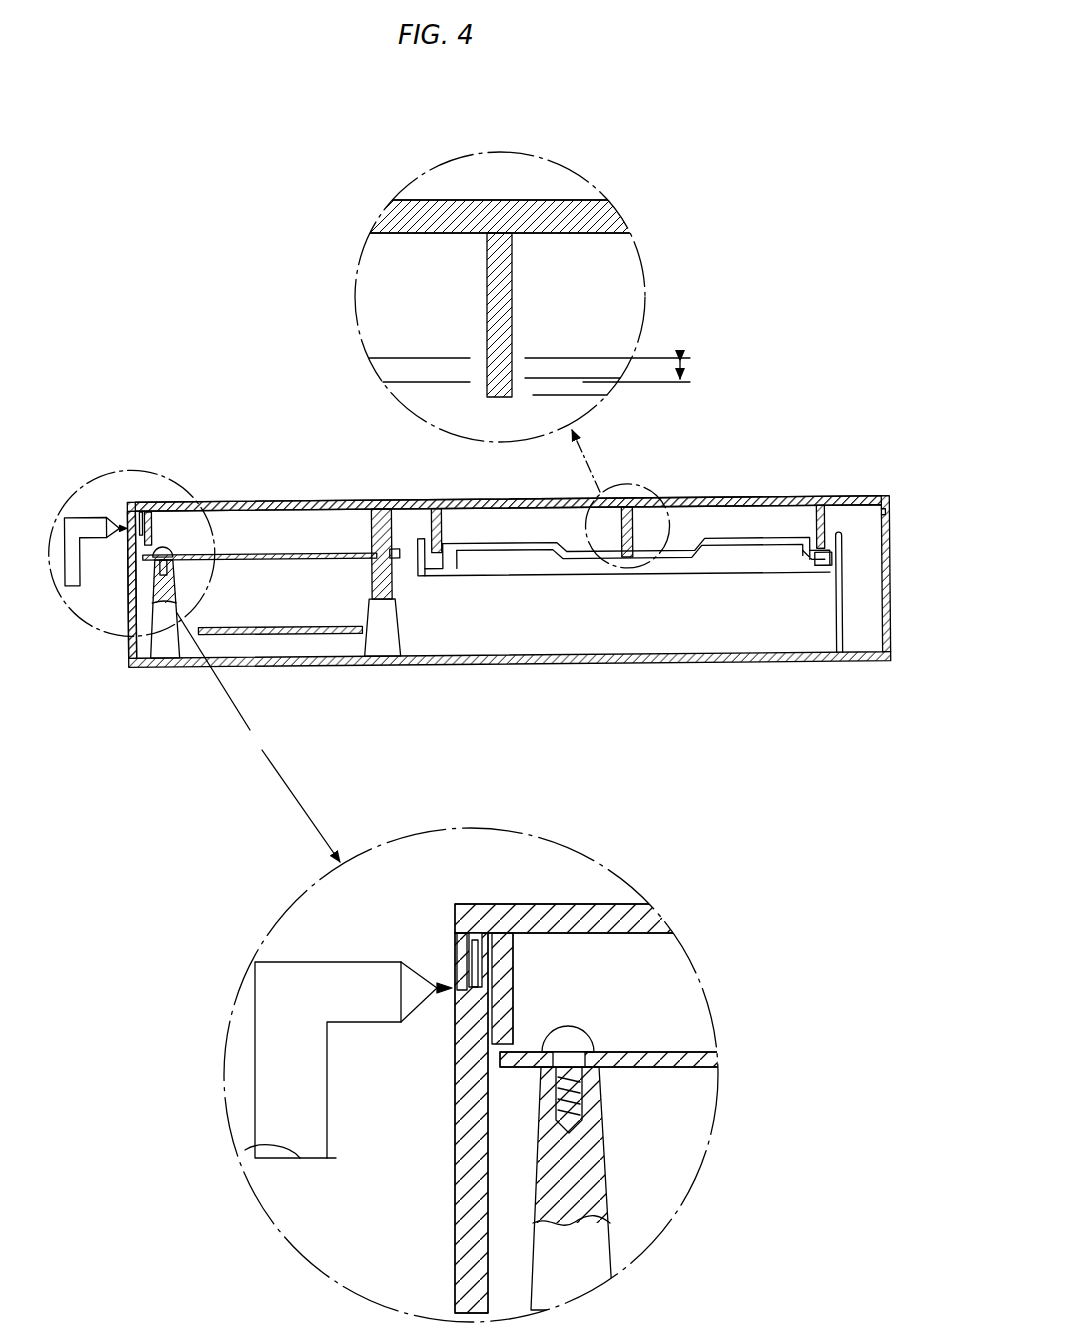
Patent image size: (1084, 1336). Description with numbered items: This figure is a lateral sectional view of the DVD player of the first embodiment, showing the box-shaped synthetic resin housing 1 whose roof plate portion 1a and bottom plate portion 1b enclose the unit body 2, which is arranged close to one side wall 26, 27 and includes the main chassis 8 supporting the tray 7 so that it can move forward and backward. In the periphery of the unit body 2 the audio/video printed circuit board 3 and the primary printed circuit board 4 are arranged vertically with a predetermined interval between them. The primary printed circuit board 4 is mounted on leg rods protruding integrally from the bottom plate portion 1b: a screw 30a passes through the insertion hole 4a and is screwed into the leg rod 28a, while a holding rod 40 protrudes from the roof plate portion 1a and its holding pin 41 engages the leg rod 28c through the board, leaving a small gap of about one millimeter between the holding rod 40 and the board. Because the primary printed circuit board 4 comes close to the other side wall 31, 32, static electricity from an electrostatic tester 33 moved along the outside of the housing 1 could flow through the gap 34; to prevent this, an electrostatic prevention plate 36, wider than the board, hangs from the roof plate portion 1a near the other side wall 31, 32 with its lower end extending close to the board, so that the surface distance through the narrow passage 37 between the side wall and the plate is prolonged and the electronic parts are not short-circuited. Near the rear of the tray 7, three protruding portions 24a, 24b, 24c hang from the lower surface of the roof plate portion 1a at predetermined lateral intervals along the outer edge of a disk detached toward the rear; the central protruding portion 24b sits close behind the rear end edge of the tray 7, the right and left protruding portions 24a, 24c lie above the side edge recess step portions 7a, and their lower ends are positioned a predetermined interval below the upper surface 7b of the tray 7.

The housing 1 is at (278, 498).
The roof plate portion 1a is at (606, 222).
The bottom plate portion 1b is at (457, 1233).
The unit body 2 is at (783, 528).
The audio/video printed circuit board 3 is at (262, 625).
The primary printed circuit board 4 is at (316, 551).
The insertion hole 4a is at (598, 1068).
The tray 7 is at (433, 366).
The side edge recess step portion 7a is at (425, 577).
The upper surface of the tray 7b is at (553, 360).
The main chassis 8 is at (848, 578).
The protruding portion 24a is at (440, 508).
The central protruding portion 24b is at (508, 278).
The protruding portion 24c is at (822, 508).
The one side wall 26 is at (887, 505).
The one side wall 27 is at (889, 632).
The leg rod 28a is at (168, 630).
The leg rod 28c is at (384, 630).
The screw 30a is at (168, 545).
The other side wall 31 is at (140, 525).
The other side wall 32 is at (130, 640).
The electrostatic tester 33 is at (75, 572).
The gap 34 is at (460, 980).
The electrostatic prevention plate 36 is at (150, 540).
The narrow passage 37 is at (502, 1000).
The holding rod 40 is at (384, 520).
The holding pin 41 is at (378, 555).